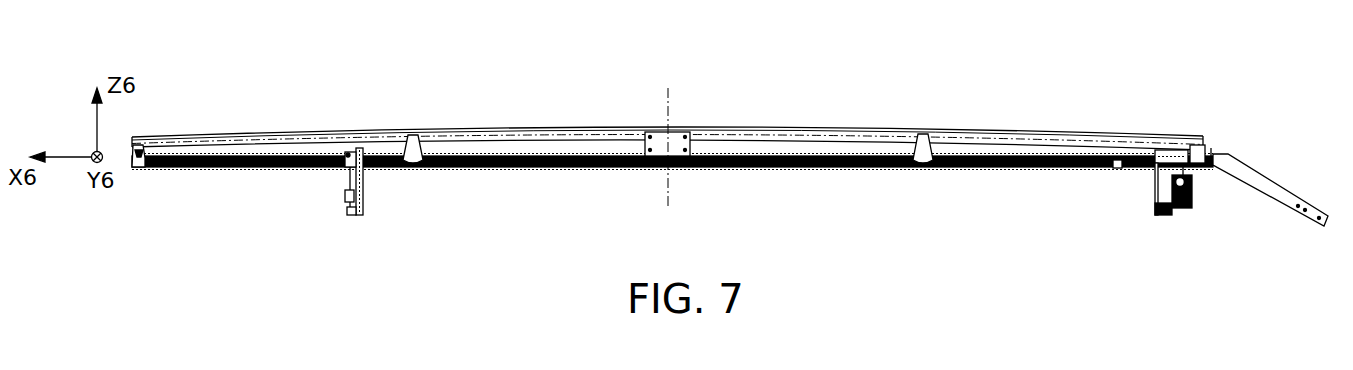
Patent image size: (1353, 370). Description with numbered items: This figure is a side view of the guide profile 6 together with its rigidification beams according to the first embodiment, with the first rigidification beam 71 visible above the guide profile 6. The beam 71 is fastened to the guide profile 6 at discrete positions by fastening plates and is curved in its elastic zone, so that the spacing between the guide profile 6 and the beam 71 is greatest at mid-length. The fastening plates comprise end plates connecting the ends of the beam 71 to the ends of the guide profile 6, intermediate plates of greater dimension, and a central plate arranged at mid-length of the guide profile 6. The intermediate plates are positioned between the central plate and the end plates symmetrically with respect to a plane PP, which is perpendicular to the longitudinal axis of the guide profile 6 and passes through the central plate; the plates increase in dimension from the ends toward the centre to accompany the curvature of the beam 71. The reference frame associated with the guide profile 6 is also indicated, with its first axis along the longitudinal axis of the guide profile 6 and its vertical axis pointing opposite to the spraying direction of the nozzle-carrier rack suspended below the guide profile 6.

The guide profile 6 is at (523, 168).
The first rigidification beam 71 is at (578, 126).
The plane PP is at (672, 190).